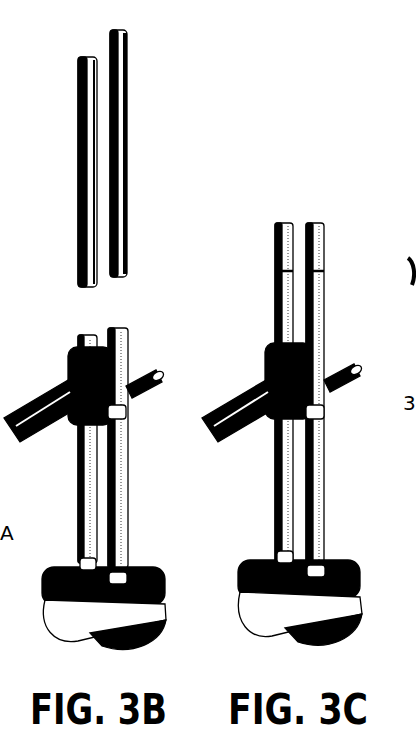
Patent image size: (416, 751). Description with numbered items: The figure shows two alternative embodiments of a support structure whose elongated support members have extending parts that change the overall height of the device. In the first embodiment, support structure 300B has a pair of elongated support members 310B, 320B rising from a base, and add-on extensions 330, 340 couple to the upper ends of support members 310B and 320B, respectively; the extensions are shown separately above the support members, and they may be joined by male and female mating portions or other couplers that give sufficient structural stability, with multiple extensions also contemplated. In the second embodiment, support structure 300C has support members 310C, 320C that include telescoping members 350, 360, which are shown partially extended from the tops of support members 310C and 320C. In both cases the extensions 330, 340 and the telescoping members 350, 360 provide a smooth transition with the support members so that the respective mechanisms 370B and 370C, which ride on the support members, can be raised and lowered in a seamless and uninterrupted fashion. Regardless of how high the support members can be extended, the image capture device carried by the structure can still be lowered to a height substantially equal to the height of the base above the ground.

In FIG. 3B, the add-on extension 340 is at (86, 170).
In FIG. 3B, the add-on extension 330 is at (124, 183).
In FIG. 3B, the support structure 300B is at (112, 436).
In FIG. 3B, the support member 320B is at (92, 447).
In FIG. 3B, the support member 310B is at (123, 493).
In FIG. 3B, the mechanism 370B is at (124, 414).
In FIG. 3C, the support structure 300C is at (295, 362).
In FIG. 3C, the telescoping member 360 is at (273, 226).
In FIG. 3C, the telescoping member 350 is at (326, 228).
In FIG. 3C, the support member 320C is at (275, 457).
In FIG. 3C, the support member 310C is at (325, 495).
In FIG. 3C, the mechanism 370C is at (322, 415).